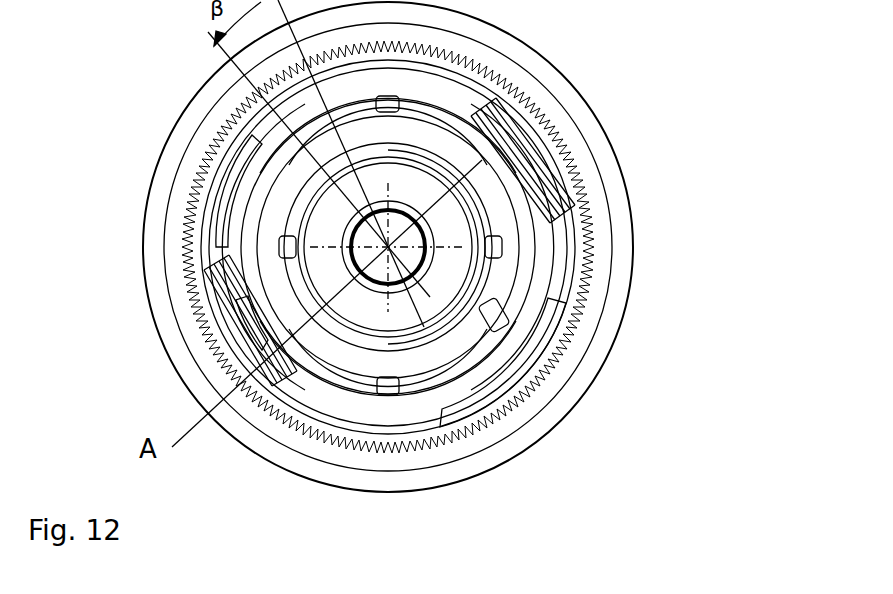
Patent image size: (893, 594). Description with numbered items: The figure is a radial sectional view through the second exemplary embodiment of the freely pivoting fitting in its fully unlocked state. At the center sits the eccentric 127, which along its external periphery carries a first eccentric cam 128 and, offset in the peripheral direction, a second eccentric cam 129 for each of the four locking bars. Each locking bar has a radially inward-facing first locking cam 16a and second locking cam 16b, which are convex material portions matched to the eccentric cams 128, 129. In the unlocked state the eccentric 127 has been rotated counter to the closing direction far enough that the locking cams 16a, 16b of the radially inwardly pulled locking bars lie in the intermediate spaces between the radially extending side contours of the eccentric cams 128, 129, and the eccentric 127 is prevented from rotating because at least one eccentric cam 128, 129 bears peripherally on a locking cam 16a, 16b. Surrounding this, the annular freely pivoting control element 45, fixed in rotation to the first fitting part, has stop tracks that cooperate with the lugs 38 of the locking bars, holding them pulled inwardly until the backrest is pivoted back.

The projection 38 is at (393, 100).
The second eccentric cam 129 is at (443, 183).
The second locking cam 16b is at (473, 215).
The first eccentric cam 128 is at (473, 257).
The first locking cam 16a is at (477, 282).
The eccentric 127 is at (318, 262).
The freely pivoting control element 45 is at (528, 344).